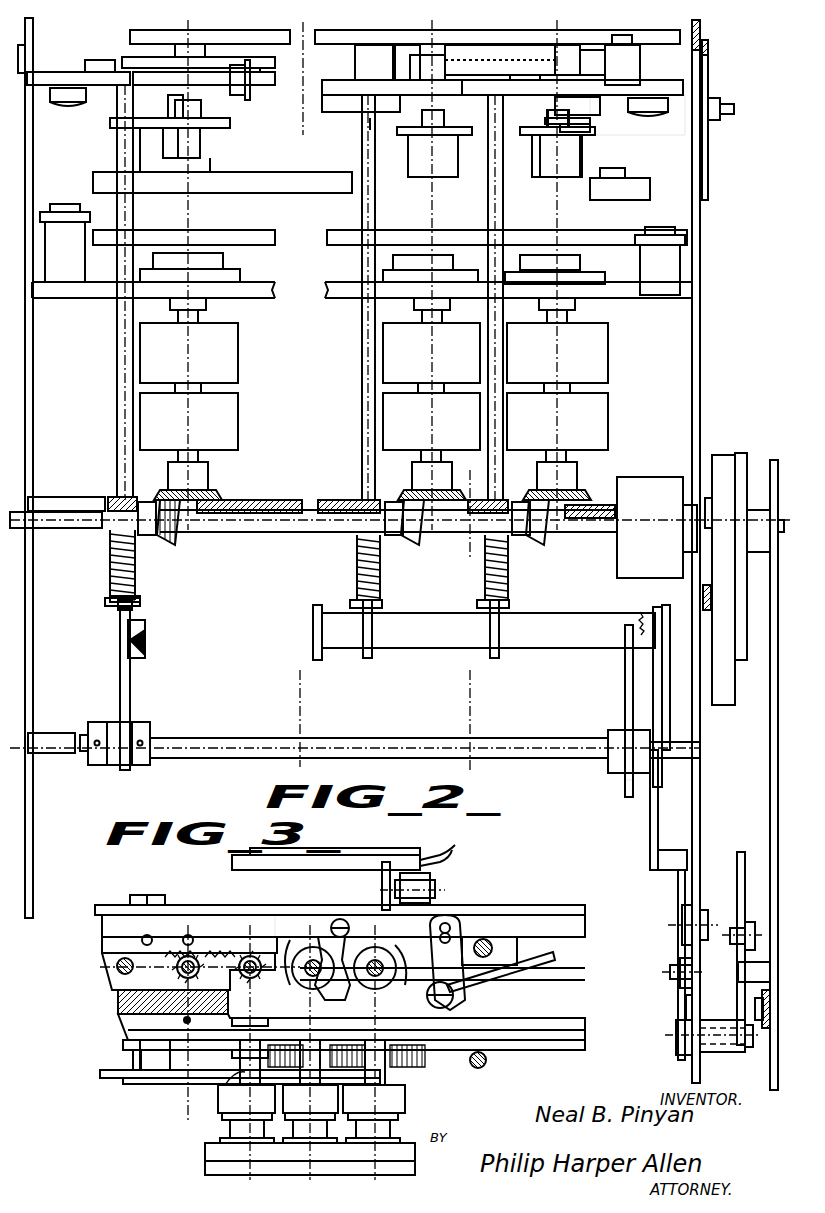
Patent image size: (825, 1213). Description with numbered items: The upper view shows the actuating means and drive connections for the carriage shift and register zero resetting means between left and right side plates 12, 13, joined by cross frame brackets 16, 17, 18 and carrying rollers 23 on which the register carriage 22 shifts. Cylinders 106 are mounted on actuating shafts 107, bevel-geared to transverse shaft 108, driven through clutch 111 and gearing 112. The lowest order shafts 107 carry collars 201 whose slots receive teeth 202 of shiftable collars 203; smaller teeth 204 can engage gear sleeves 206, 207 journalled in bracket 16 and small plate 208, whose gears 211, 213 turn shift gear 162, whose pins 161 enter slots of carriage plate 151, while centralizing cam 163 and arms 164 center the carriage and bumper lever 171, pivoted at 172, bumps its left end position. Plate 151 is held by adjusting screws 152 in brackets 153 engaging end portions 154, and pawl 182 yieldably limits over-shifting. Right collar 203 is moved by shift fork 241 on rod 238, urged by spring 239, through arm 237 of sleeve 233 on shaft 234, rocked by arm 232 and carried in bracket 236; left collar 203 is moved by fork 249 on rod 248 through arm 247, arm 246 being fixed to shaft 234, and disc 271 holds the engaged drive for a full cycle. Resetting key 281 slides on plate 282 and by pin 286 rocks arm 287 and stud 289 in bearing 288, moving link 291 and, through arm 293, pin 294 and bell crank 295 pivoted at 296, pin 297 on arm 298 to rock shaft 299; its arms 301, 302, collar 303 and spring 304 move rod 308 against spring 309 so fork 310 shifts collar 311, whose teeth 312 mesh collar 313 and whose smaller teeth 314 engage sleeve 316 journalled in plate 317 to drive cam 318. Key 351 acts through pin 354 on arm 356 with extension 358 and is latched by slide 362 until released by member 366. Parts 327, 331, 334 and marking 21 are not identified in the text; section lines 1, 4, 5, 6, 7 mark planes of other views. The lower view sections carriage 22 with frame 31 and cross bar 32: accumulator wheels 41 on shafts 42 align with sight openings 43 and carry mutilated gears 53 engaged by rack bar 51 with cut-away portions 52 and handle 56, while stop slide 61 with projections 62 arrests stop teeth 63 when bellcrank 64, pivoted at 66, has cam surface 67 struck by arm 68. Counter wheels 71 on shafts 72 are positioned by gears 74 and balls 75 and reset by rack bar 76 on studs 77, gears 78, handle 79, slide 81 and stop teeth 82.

In FIG. 2, the section line 1 is at (298, 23).
In FIG. 2, the section line 4 is at (738, 60).
In FIG. 2, the section line 5 is at (737, 410).
In FIG. 2, the section line 6 is at (479, 473).
In FIG. 2, the section line 7 is at (770, 790).
In FIG. 2, the left side plate 12 is at (33, 805).
In FIG. 2, the right side plate 13 is at (692, 818).
In FIG. 2, the cross frame bracket 16 is at (655, 95).
In FIG. 2, the cross frame bracket 17 is at (290, 298).
In FIG. 2, the cross frame bracket 18 is at (268, 500).
In FIG. 2, the roller 23 is at (665, 132).
In FIG. 2, the cylinder 106 is at (238, 380).
In FIG. 2, the actuating shaft 107 is at (208, 472).
In FIG. 2, the transverse shaft 108 is at (270, 513).
In FIG. 2, the clutch 111 is at (722, 455).
In FIG. 2, the gearing 112 is at (747, 432).
In FIG. 2, the shift pin 161 is at (495, 45).
In FIG. 2, the shift gear 162 is at (448, 55).
In FIG. 2, the centralizing cam 163 is at (525, 80).
In FIG. 2, the centralizing arm 164 is at (465, 80).
In FIG. 2, the bumper lever 171 is at (45, 72).
In FIG. 2, the pivot of bumper lever 172 is at (90, 72).
In FIG. 2, the collar 201 is at (548, 165).
In FIG. 2, the teeth of shiftable collar 202 is at (540, 152).
In FIG. 2, the shiftable drive establishing collar 203 is at (590, 121).
In FIG. 2, the smaller teeth 204 is at (575, 112).
In FIG. 2, the gear sleeve 206 is at (418, 45).
In FIG. 2, the gear sleeve 207 is at (575, 72).
In FIG. 2, the small plate 208 is at (585, 50).
In FIG. 2, the gear 211 is at (374, 62).
In FIG. 2, the gear 213 is at (560, 45).
In FIG. 2, the arm 232 is at (653, 690).
In FIG. 2, the sleeve 233 is at (548, 616).
In FIG. 2, the transverse shaft 234 is at (313, 630).
In FIG. 2, the bracket 236 is at (318, 578).
In FIG. 2, the depending arm 237 is at (499, 658).
In FIG. 2, the rod 238 is at (503, 428).
In FIG. 2, the spring 239 is at (508, 575).
In FIG. 2, the shift fork 241 is at (458, 140).
In FIG. 2, the arm 246 is at (662, 708).
In FIG. 2, the depending arm 247 is at (372, 658).
In FIG. 2, the shift rod 248 is at (362, 428).
In FIG. 2, the shift fork 249 is at (365, 128).
In FIG. 2, the disc 271 is at (590, 130).
In FIG. 2, the resetting key 281 is at (762, 998).
In FIG. 2, the plate 282 is at (770, 818).
In FIG. 2, the pin 286 is at (740, 970).
In FIG. 2, the arm 287 is at (750, 922).
In FIG. 2, the bearing 288 is at (705, 1040).
In FIG. 2, the stud 289 is at (676, 1027).
In FIG. 2, the link 291 is at (737, 885).
In FIG. 2, the arm 293 is at (686, 1000).
In FIG. 2, the pin 294 is at (670, 968).
In FIG. 2, the bell crank 295 is at (682, 938).
In FIG. 2, the pivot of bell crank 296 is at (682, 912).
In FIG. 2, the pin 297 is at (670, 858).
In FIG. 2, the arm 298 is at (650, 818).
In FIG. 2, the transverse shaft 299 is at (390, 738).
In FIG. 2, the arm 301 is at (130, 715).
In FIG. 2, the second arm 302 is at (120, 675).
In FIG. 2, the collar 303 is at (95, 765).
In FIG. 2, the spring 304 is at (145, 645).
In FIG. 2, the rod 308 is at (117, 422).
In FIG. 2, the spring 309 is at (110, 560).
In FIG. 2, the resetting control fork 310 is at (110, 123).
In FIG. 2, the drive establishing collar 311 is at (160, 128).
In FIG. 2, the teeth 312 is at (200, 143).
In FIG. 2, the collar 313 is at (212, 163).
In FIG. 2, the smaller teeth 314 is at (168, 108).
In FIG. 2, the sleeve 316 is at (205, 50).
In FIG. 2, the plate 317 is at (262, 58).
In FIG. 2, the cam 318 is at (132, 58).
In FIG. 2, the post 327 is at (238, 95).
In FIG. 2, the pin 331 is at (266, 66).
In FIG. 2, the plate 334 is at (248, 100).
In FIG. 2, the carriage return and register resetting key 351 is at (703, 596).
In FIG. 2, the pin 354 is at (640, 612).
In FIG. 2, the arm 356 is at (625, 665).
In FIG. 2, the extension 358 is at (625, 788).
In FIG. 2, the latching slide 362 is at (708, 160).
In FIG. 2, the latch releasing member 366 is at (718, 120).
In FIG. 3, the wheel 21 is at (224, 1102).
In FIG. 3, the register carriage 22 is at (118, 998).
In FIG. 3, the carriage frame 31 is at (542, 1030).
In FIG. 3, the cross bar 32 is at (205, 1157).
In FIG. 3, the numeral wheel 41 is at (300, 945).
In FIG. 3, the numeral wheel shaft 42 is at (117, 968).
In FIG. 3, the sight opening 43 is at (365, 985).
In FIG. 3, the rack bar 51 is at (215, 935).
In FIG. 3, the cut-away portion 52 is at (205, 937).
In FIG. 3, the mutilated gear 53 is at (240, 972).
In FIG. 3, the handle 56 is at (490, 942).
In FIG. 3, the stop slide 61 is at (360, 915).
In FIG. 3, the stop projection 62 is at (325, 937).
In FIG. 3, the stop tooth 63 is at (298, 982).
In FIG. 3, the bellcrank 64 is at (407, 970).
In FIG. 3, the pivot of bellcrank 66 is at (440, 1008).
In FIG. 3, the cam surface 67 is at (553, 952).
In FIG. 3, the arm 68 is at (515, 940).
In FIG. 3, the numeral wheel 71 is at (218, 1112).
In FIG. 3, the shaft 72 is at (240, 1055).
In FIG. 3, the ten tooth gear 74 is at (232, 1020).
In FIG. 3, the spring pressed ball 75 is at (184, 1020).
In FIG. 3, the rack bar 76 is at (462, 1050).
In FIG. 3, the flanged stud 77 is at (140, 1055).
In FIG. 3, the mutilated gear 78 is at (290, 1060).
In FIG. 3, the handle 79 is at (482, 1068).
In FIG. 3, the slide 81 is at (118, 1078).
In FIG. 3, the stop tooth 82 is at (222, 1092).
In FIG. 3, the plate 151 is at (280, 870).
In FIG. 3, the adjusting screw 152 is at (432, 888).
In FIG. 3, the bracket 153 is at (475, 920).
In FIG. 3, the end portion 154 is at (395, 862).
In FIG. 3, the pawl 182 is at (440, 850).